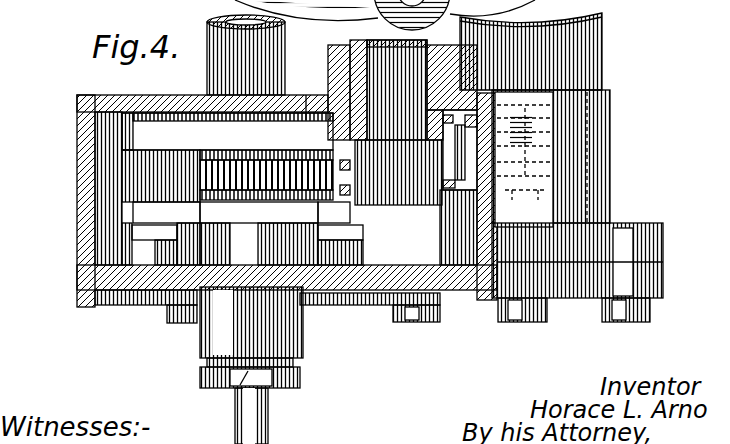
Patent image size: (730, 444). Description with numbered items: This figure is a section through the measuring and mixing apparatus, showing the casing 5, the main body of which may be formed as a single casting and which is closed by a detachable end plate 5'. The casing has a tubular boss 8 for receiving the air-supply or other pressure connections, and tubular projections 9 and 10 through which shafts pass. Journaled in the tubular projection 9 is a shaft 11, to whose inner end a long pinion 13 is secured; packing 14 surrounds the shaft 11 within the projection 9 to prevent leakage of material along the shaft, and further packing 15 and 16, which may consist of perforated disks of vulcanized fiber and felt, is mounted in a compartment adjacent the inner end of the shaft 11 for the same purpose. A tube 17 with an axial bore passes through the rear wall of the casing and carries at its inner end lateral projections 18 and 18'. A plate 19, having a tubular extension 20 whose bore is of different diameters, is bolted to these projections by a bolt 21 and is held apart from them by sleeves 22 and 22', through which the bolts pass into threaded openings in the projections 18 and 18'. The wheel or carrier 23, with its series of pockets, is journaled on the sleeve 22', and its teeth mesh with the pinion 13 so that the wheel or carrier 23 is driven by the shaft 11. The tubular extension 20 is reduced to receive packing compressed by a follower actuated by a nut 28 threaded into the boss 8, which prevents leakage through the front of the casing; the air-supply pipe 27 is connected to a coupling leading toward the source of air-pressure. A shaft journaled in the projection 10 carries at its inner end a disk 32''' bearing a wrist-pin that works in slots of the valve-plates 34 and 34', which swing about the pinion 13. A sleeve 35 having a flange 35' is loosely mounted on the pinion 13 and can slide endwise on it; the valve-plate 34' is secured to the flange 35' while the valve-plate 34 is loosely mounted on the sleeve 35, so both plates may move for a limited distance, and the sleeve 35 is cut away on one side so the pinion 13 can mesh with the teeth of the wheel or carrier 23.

The casing 5 is at (275, 176).
The detachable end plate 5' is at (372, 314).
The tubular boss 8 is at (251, 327).
The tubular projection 9 is at (329, 50).
The tubular projection 10 is at (531, 51).
The shaft 11 is at (397, 90).
The long pinion 13 is at (405, 206).
The packing 14 is at (354, 42).
The packing 15 is at (448, 130).
The packing 16 is at (434, 46).
The tube 17 is at (208, 28).
The lateral projection 18 is at (227, 131).
The lateral projection 18' is at (309, 91).
The plate 19 is at (166, 213).
The tubular extension 20 is at (259, 244).
The bolt 21 is at (145, 232).
The sleeve 22 is at (116, 188).
The sleeve 22' is at (335, 192).
The wheel or carrier 23 is at (262, 152).
The air-supply pipe 27 is at (268, 412).
The nut 28 is at (300, 378).
The disk 32''' is at (581, 156).
The valve-plate 34 is at (266, 207).
The valve-plate 34' is at (266, 157).
The sleeve 35 is at (442, 227).
The flange 35' is at (524, 159).